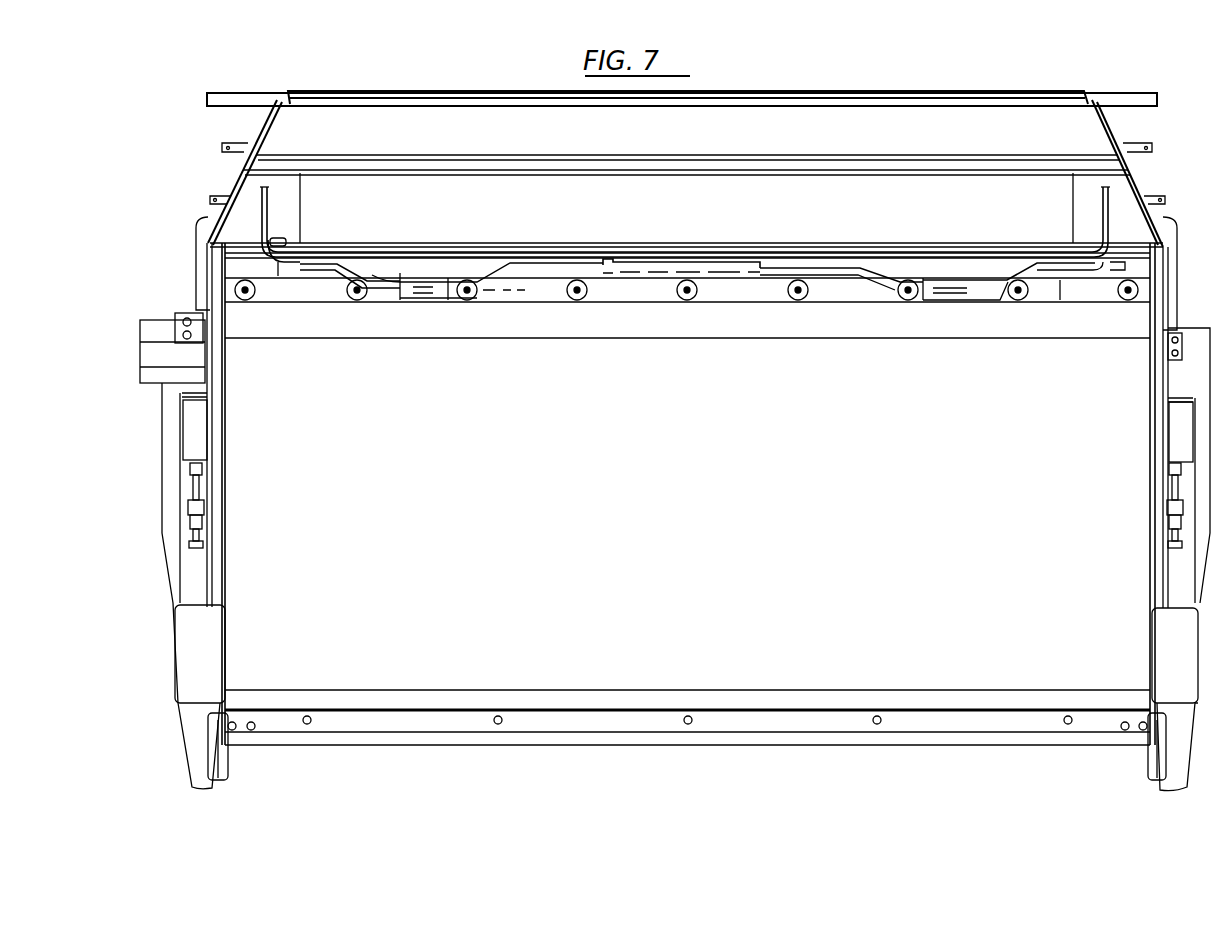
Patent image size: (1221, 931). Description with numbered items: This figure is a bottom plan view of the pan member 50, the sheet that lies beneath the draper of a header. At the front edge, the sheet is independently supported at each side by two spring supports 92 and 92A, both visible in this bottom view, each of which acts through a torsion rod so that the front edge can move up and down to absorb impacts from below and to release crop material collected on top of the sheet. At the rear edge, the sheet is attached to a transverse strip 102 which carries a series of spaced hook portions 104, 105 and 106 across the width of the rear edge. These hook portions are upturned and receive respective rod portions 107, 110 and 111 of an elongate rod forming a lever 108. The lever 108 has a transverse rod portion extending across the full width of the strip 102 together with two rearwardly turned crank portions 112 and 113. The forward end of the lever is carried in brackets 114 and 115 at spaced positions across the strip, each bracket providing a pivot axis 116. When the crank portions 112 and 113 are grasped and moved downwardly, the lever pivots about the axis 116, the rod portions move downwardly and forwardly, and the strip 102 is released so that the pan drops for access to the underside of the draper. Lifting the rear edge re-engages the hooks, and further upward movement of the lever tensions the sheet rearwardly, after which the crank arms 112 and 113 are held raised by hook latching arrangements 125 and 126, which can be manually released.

The pan member 50 is at (508, 653).
The spring support 92 is at (222, 757).
The spring support 92A is at (1157, 748).
The transverse strip 102 is at (640, 273).
The hook portion 104 is at (314, 270).
The hook portion 105 is at (602, 265).
The hook portion 106 is at (1047, 267).
The rod portion 107 is at (318, 264).
The lever 108 is at (283, 218).
The rod portion 110 is at (787, 268).
The rod portion 111 is at (1073, 267).
The crank portion 112 is at (270, 200).
The crank portion 113 is at (1100, 192).
The bracket 114 is at (448, 285).
The bracket 115 is at (930, 300).
The pivot axis 116 is at (507, 295).
The hook latching arrangement 125 is at (280, 262).
The hook latching arrangement 126 is at (1110, 270).